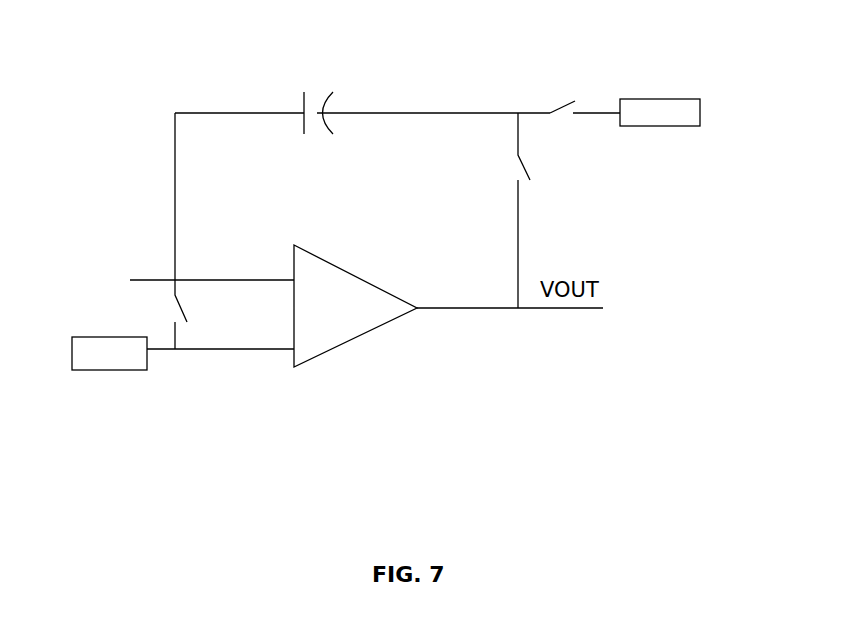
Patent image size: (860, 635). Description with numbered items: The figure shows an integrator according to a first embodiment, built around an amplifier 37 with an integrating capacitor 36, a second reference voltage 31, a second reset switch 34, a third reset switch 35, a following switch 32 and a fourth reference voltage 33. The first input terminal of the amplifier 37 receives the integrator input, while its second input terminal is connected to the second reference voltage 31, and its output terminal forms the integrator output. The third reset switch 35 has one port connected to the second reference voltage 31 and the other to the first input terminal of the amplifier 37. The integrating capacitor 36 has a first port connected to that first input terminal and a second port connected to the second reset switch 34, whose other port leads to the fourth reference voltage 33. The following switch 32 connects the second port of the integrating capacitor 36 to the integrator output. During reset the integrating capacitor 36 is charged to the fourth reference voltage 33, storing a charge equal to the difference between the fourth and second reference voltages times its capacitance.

The second reference voltage 31 is at (113, 370).
The following switch 32 is at (537, 176).
The fourth reference voltage 33 is at (677, 127).
The second reset switch 34 is at (575, 107).
The third reset switch 35 is at (168, 308).
The integrating capacitor 36 is at (333, 99).
The amplifier 37 is at (363, 337).